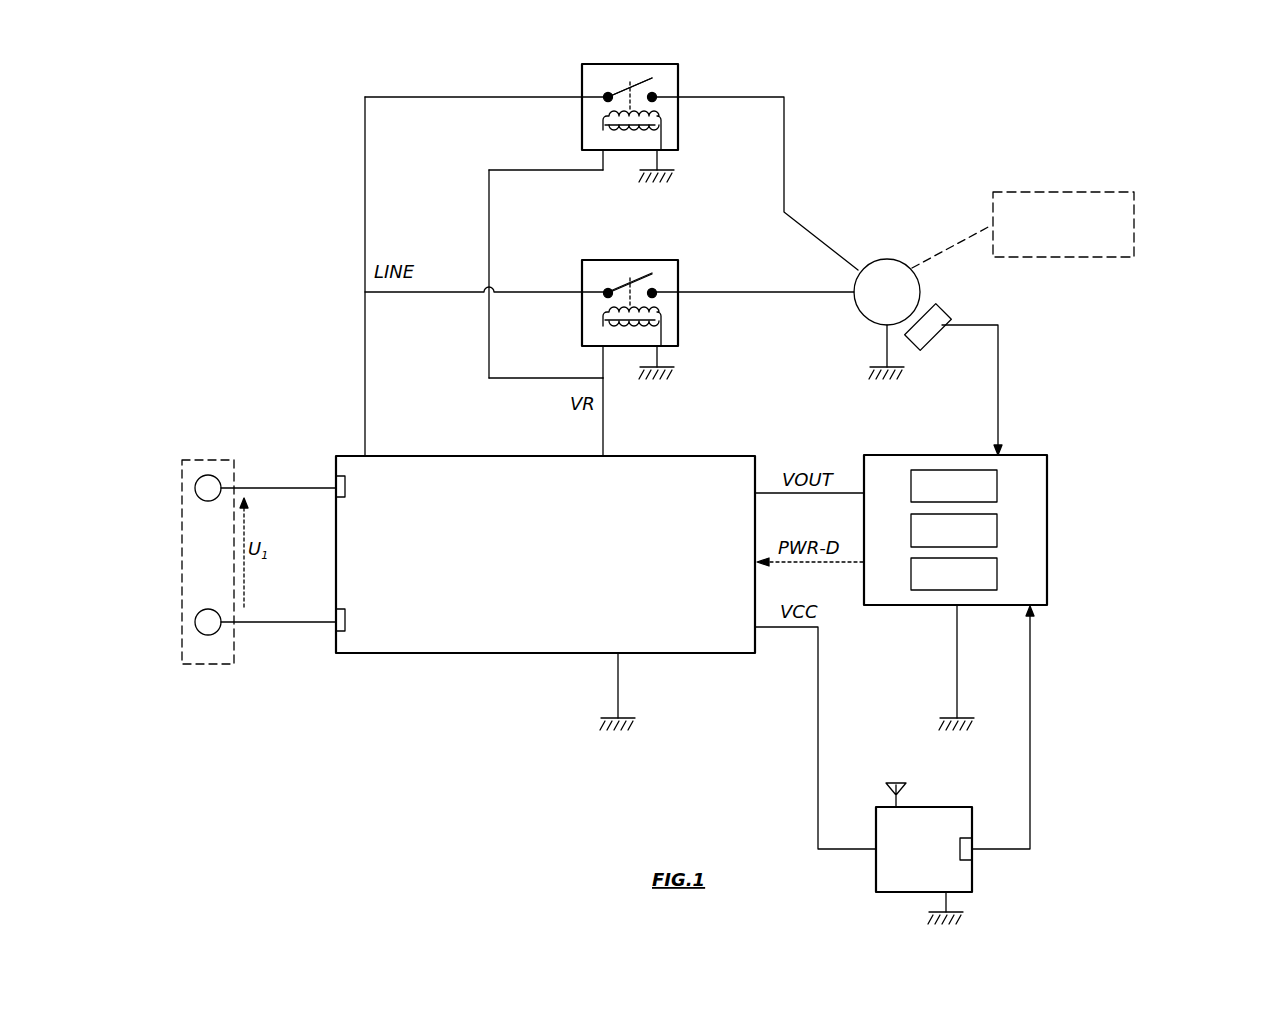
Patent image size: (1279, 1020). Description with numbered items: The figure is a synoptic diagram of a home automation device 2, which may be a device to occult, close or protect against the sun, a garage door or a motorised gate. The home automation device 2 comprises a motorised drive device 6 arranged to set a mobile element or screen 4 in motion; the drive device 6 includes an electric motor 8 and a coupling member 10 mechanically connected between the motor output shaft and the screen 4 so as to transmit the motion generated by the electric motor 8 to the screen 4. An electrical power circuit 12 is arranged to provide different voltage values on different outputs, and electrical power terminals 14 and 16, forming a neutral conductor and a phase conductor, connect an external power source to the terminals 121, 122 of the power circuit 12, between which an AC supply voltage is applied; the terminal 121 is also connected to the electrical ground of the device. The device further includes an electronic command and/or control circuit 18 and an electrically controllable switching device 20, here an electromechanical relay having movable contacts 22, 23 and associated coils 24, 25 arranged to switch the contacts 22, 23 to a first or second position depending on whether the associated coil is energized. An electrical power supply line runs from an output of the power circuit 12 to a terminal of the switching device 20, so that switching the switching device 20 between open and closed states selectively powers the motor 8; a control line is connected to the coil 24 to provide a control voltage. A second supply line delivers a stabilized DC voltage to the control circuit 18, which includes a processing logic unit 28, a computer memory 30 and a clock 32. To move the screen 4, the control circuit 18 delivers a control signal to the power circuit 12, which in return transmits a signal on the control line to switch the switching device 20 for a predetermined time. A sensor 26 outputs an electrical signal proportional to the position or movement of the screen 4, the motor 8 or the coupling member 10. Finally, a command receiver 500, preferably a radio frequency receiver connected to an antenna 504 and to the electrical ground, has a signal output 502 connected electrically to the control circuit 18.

The home automation device 2 is at (1146, 273).
The screen 4 is at (1063, 224).
The motorised drive device 6 is at (268, 328).
The electric motor 8 is at (888, 277).
The coupling member 10 is at (962, 243).
The electrical power circuit 12 is at (727, 653).
The electrical power terminal 14 is at (285, 622).
The electrical power terminal 16 is at (285, 488).
The electronic command and/or control circuit 18 is at (889, 605).
The switching device 20 is at (590, 64).
The movable contact 22 is at (630, 272).
The movable contact 23 is at (630, 78).
The coil 24 is at (660, 320).
The coil 25 is at (660, 125).
The sensor 26 is at (938, 313).
The processing logic unit 28 is at (997, 485).
The computer memory 30 is at (997, 523).
The clock 32 is at (997, 570).
The terminal 121 is at (346, 487).
The terminal 122 is at (346, 621).
The wireless module 500 is at (955, 765).
The signal output 502 is at (966, 838).
The antenna 504 is at (882, 800).